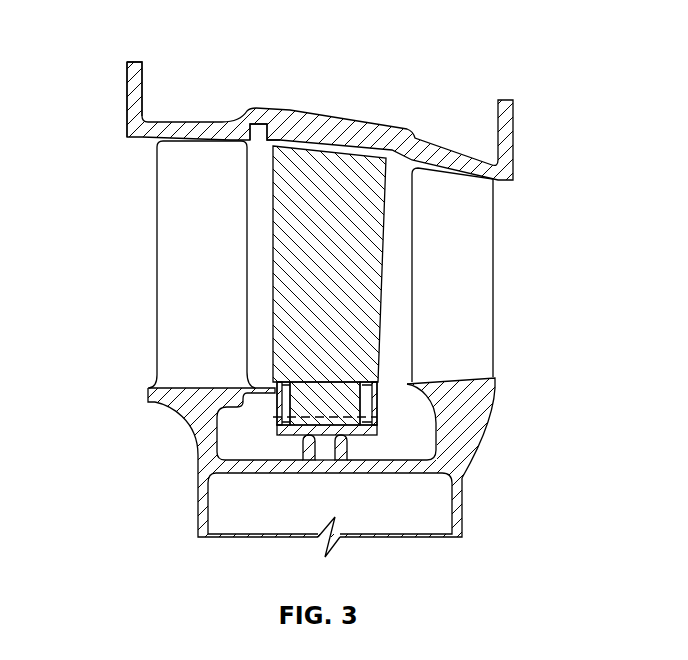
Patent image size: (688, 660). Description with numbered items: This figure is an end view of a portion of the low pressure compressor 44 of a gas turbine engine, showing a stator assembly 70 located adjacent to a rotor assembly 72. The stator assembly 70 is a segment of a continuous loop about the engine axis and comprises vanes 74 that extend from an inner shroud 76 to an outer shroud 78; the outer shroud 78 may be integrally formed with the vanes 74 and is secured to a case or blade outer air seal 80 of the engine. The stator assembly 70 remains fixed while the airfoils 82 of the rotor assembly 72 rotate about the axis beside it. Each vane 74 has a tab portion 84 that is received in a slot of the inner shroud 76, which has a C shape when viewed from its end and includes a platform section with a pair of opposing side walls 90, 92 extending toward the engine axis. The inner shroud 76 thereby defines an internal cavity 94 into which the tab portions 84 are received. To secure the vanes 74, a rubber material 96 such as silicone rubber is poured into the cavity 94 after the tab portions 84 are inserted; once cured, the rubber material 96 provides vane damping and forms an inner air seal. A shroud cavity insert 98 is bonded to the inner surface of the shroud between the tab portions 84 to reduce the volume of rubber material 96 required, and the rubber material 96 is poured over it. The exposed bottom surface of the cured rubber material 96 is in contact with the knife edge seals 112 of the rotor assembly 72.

The low pressure compressor 44 is at (481, 63).
The stator assembly 70 is at (266, 228).
The rotor assembly 72 is at (483, 484).
The vane 74 is at (320, 275).
The inner shroud 76 is at (290, 384).
The outer shroud 78 is at (273, 140).
The blade outer air seal 80 is at (145, 125).
The airfoil 82 is at (172, 227).
The tab portion 84 is at (337, 420).
The side wall 90 is at (250, 383).
The side wall 92 is at (377, 405).
The internal cavity 94 is at (270, 393).
The rubber material 96 is at (283, 437).
The shroud cavity insert 98 is at (385, 388).
The knife edge seal 112 is at (312, 456).